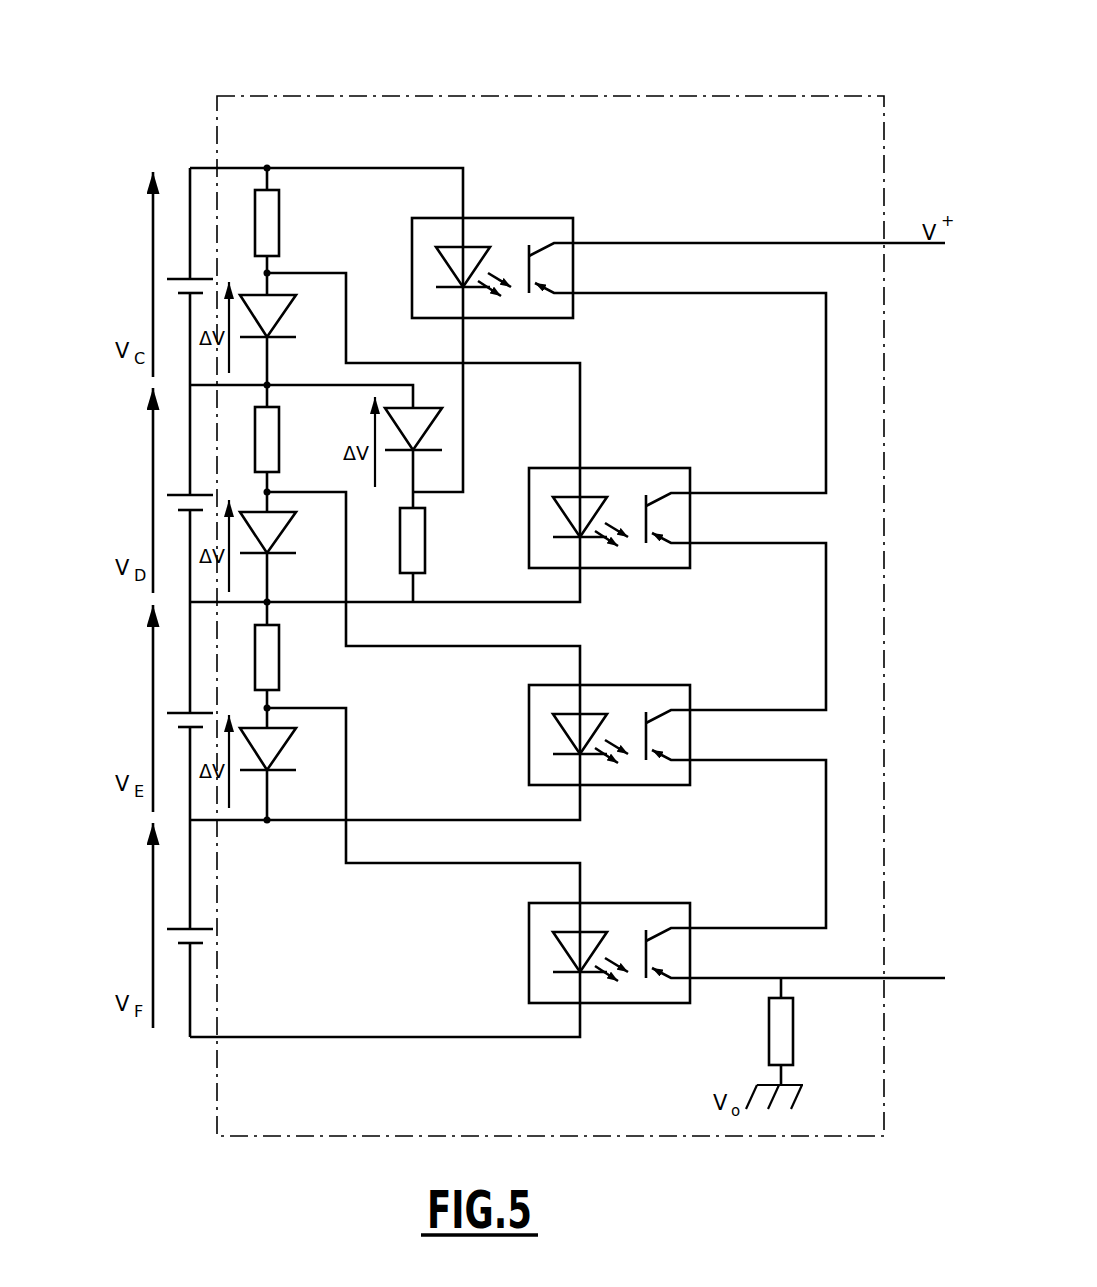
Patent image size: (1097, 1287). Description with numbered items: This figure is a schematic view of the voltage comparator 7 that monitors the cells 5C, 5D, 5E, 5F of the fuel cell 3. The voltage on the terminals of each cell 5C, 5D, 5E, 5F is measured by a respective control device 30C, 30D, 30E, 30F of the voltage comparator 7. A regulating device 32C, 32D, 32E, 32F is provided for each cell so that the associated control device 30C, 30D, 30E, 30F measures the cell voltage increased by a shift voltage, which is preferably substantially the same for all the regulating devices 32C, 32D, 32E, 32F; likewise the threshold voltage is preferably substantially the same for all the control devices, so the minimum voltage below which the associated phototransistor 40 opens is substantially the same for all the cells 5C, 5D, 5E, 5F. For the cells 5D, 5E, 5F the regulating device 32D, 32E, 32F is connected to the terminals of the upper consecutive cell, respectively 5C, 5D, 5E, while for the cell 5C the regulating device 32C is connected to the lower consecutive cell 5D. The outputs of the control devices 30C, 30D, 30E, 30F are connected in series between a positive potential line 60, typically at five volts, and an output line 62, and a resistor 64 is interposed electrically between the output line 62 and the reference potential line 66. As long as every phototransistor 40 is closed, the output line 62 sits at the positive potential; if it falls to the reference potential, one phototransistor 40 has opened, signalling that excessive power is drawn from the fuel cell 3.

The fuel cell 3 is at (170, 153).
The voltage comparator 7 is at (765, 95).
The cell 5C is at (148, 283).
The cell 5D is at (148, 498).
The cell 5E is at (148, 717).
The cell 5F is at (148, 929).
The control device 30C is at (518, 218).
The control device 30D is at (647, 468).
The control device 30E is at (647, 685).
The control device 30F is at (647, 903).
The regulating device 32C is at (430, 428).
The regulating device 32D is at (288, 315).
The regulating device 32E is at (282, 535).
The regulating device 32F is at (282, 752).
The phototransistor 40 is at (542, 300).
The positive potential line 60 is at (746, 243).
The output line 62 is at (920, 977).
The resistor 64 is at (793, 1025).
The reference potential line 66 is at (783, 1092).